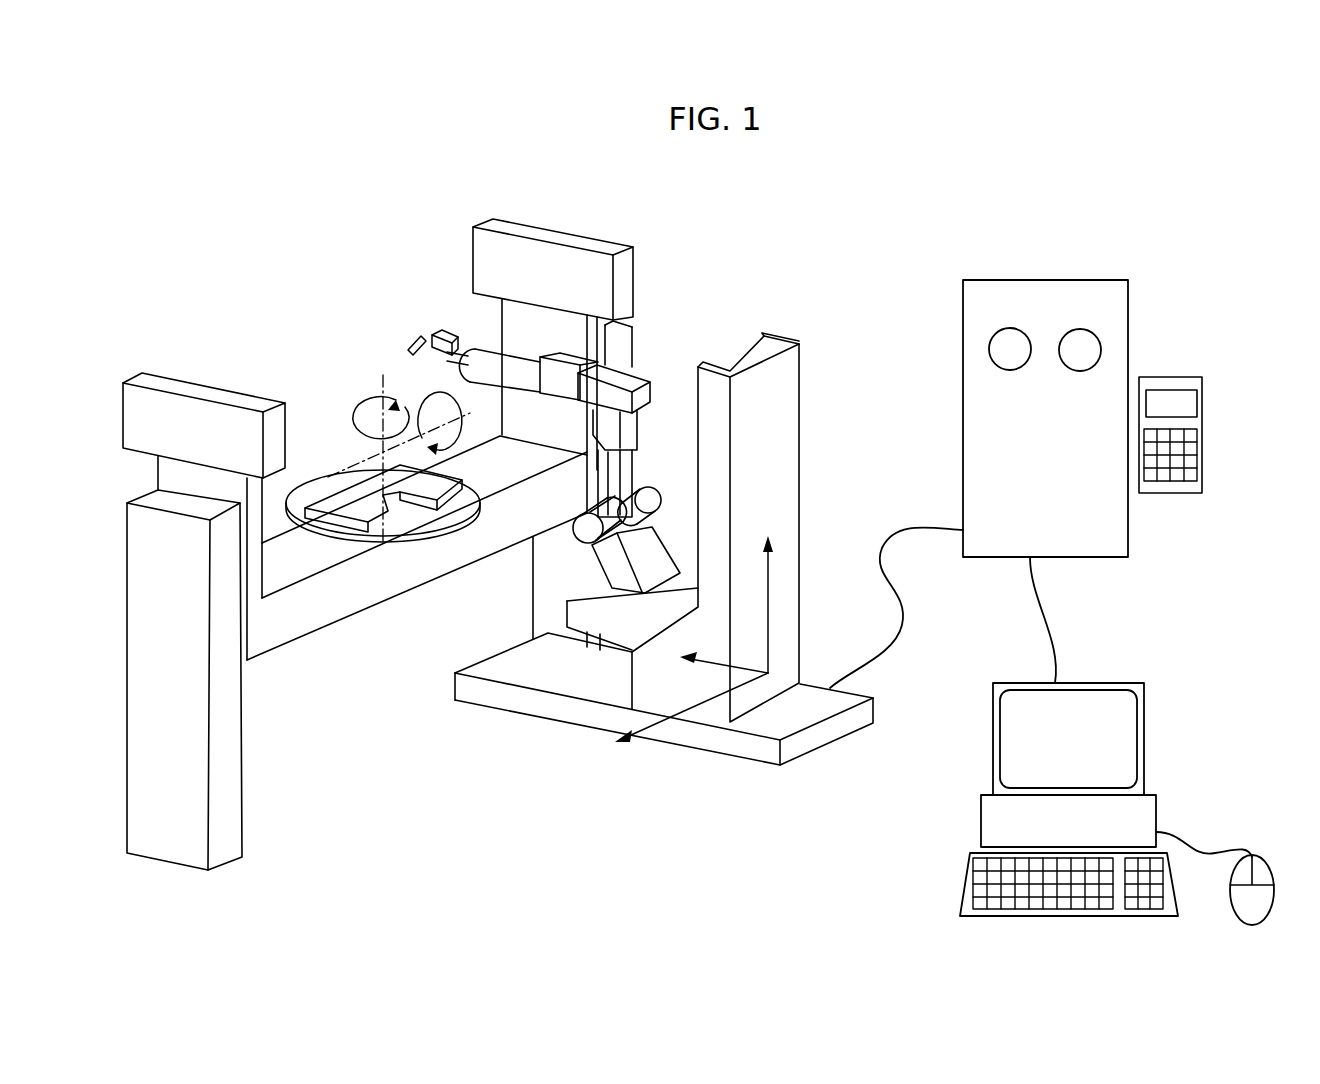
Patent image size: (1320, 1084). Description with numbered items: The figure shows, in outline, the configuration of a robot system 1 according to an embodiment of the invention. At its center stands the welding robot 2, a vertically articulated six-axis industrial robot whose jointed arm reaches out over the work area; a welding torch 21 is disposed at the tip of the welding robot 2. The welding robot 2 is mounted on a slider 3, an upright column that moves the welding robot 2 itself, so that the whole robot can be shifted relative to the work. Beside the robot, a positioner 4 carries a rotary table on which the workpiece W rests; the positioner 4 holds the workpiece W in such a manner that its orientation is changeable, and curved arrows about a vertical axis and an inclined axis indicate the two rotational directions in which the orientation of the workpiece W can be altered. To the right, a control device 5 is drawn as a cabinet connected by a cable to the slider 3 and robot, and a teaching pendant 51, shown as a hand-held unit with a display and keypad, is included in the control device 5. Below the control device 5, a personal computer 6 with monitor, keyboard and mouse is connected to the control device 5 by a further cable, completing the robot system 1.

The robot system 1 is at (722, 265).
The welding robot 2 is at (637, 378).
The welding torch 21 is at (418, 334).
The slider 3 is at (790, 445).
The positioner 4 is at (320, 620).
The control device 5 is at (1110, 306).
The teaching pendant 51 is at (1207, 392).
The personal computer 6 is at (1144, 700).
The workpiece W is at (443, 483).